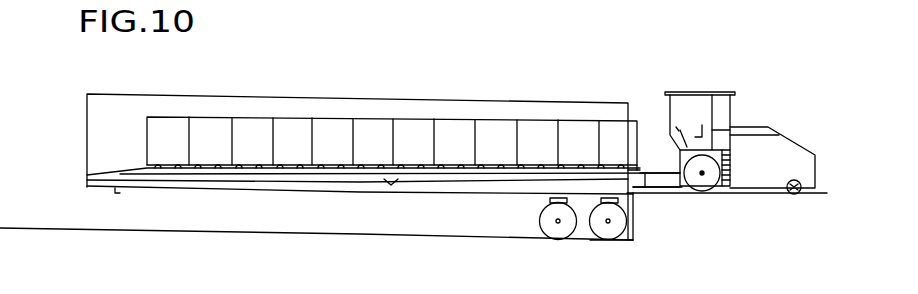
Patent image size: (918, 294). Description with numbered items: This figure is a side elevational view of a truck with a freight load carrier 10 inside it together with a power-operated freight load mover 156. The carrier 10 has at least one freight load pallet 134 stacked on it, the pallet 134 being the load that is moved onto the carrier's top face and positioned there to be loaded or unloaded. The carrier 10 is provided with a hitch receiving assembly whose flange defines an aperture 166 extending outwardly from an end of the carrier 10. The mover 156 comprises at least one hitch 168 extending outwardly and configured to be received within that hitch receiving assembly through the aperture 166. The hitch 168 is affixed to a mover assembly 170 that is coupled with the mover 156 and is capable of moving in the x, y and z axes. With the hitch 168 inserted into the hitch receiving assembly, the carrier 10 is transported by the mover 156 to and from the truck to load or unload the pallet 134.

The carrier 10 is at (372, 162).
The freight load pallet 134 is at (450, 137).
The power-operated freight load mover 156 is at (762, 127).
The aperture 166 is at (650, 142).
The hitch 168 is at (657, 152).
The mover assembly 170 is at (665, 175).